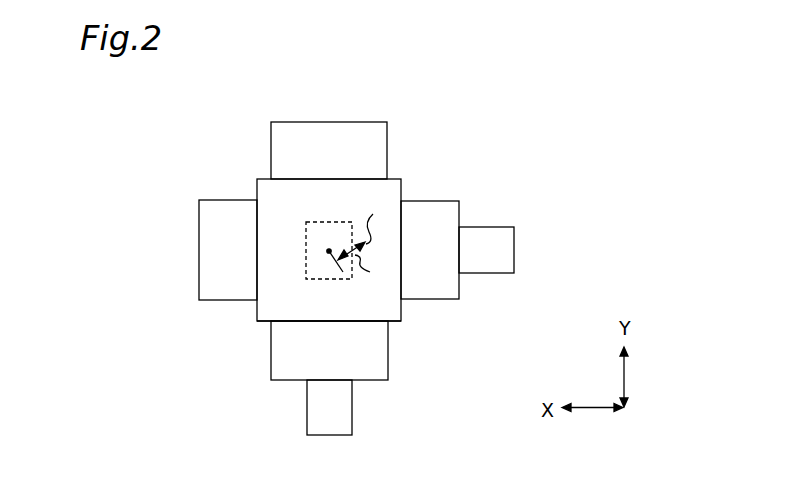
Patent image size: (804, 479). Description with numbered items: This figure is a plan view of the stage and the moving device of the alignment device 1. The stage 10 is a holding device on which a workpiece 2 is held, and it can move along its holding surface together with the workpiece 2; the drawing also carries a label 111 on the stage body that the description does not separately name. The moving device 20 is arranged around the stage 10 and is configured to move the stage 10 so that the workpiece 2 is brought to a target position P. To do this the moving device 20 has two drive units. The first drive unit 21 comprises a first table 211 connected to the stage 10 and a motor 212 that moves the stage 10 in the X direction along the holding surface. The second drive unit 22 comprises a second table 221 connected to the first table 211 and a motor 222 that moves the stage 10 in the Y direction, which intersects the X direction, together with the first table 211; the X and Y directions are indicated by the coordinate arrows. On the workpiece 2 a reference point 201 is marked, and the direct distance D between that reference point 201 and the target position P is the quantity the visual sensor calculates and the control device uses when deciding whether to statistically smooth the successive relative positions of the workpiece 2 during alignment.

The alignment device 1 is at (438, 97).
The workpiece 2 is at (343, 228).
The stage 10 is at (250, 330).
The moving device 20 is at (205, 190).
The first drive unit 21 is at (530, 158).
The second drive unit 22 is at (446, 348).
The bottom surface of main body 111 is at (393, 313).
The reference point 201 is at (329, 251).
The first table 211 is at (441, 211).
The motor 212 is at (486, 227).
The second table 221 is at (375, 367).
The motor 222 is at (343, 400).